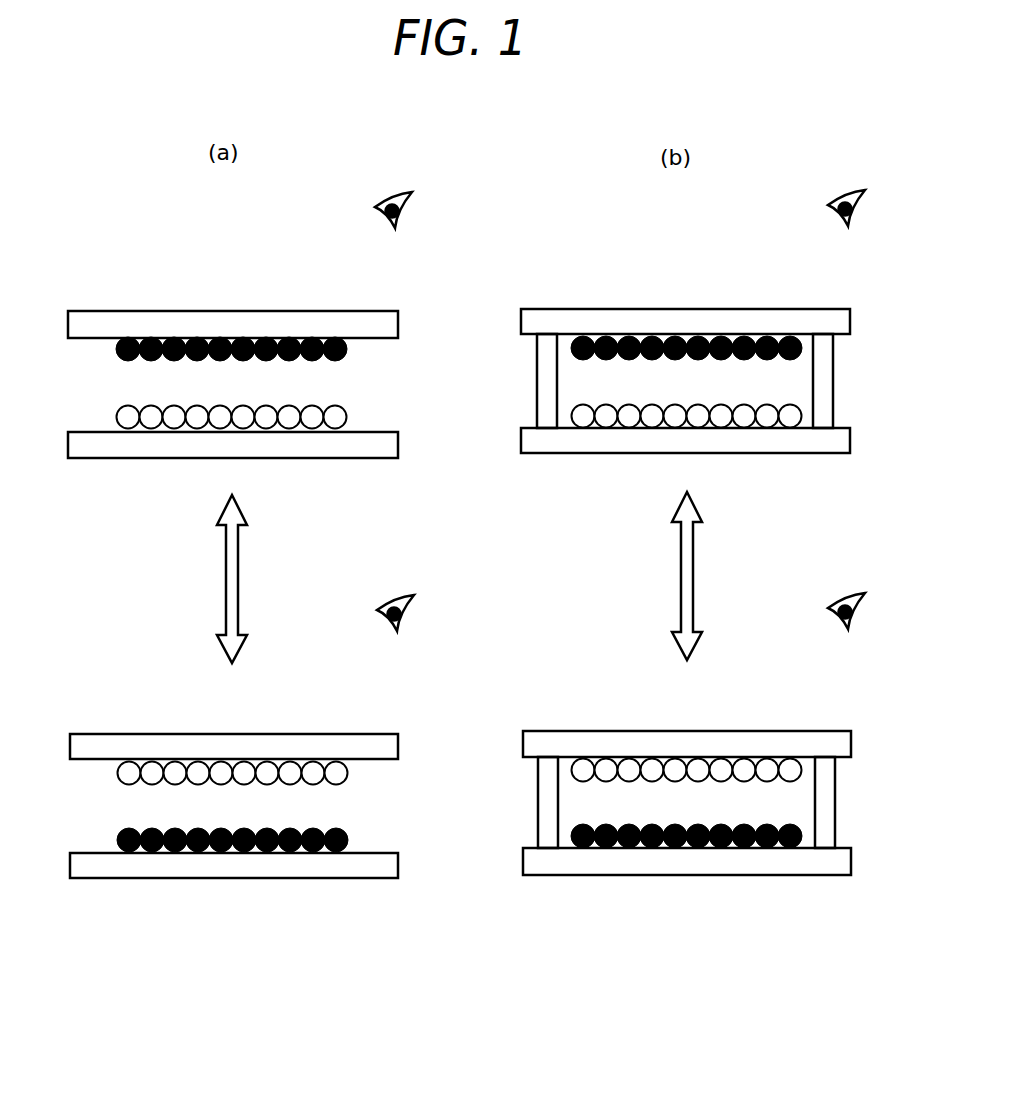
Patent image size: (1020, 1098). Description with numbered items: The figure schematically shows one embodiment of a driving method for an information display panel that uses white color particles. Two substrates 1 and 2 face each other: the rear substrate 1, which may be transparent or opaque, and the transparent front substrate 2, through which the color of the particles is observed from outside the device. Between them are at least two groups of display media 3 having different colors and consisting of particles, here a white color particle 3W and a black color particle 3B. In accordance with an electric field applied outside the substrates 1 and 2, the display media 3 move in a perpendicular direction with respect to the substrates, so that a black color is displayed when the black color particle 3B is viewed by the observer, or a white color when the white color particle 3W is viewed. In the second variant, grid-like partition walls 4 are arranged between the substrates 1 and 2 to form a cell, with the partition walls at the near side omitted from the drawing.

The rear substrate 1 is at (163, 445).
The transparent front substrate 2 is at (232, 325).
The display media 3 is at (459, 595).
The black color particle 3B is at (346, 354).
The white color particle 3W is at (346, 414).
The partition wall 4 is at (830, 377).